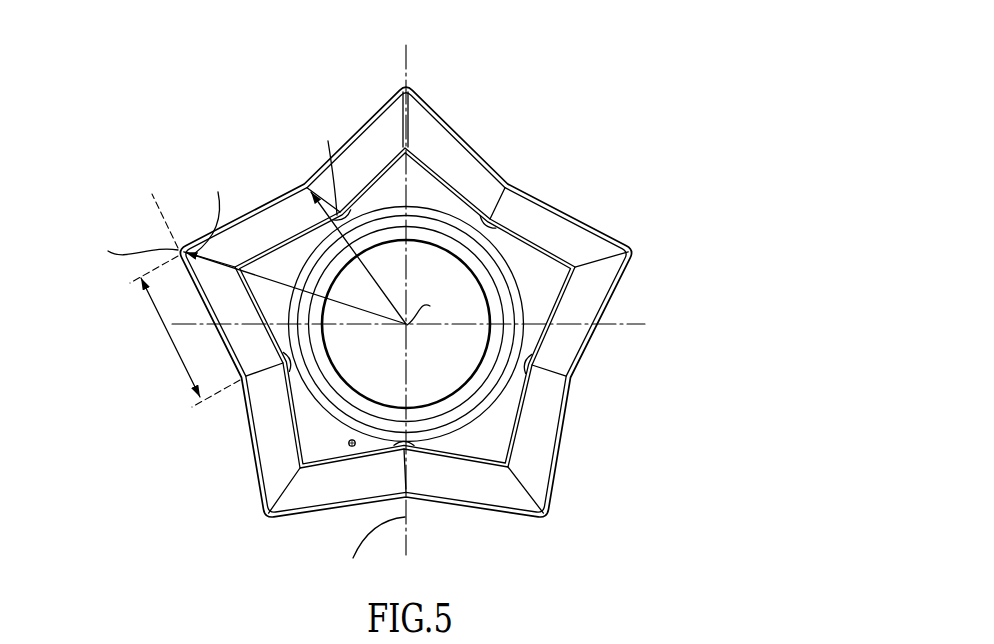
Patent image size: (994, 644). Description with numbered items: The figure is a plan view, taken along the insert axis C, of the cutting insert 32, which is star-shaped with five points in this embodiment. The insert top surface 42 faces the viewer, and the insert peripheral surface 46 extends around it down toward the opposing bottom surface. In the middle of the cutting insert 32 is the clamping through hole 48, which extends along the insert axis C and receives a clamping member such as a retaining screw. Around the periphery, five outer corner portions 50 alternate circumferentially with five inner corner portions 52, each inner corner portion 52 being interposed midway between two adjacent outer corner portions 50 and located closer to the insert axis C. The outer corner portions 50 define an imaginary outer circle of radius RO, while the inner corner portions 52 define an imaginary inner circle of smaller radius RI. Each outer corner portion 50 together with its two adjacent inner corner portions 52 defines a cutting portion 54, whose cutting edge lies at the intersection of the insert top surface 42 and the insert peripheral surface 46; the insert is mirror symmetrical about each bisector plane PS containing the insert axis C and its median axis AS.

The cutting insert 32 is at (419, 315).
The insert top surface 42 is at (448, 160).
The insert peripheral surface 46 is at (603, 225).
The clamping through hole 48 is at (466, 309).
The outer corner portion 50 is at (412, 77).
The inner corner portion 52 is at (297, 172).
The cutting portion 54 is at (437, 97).